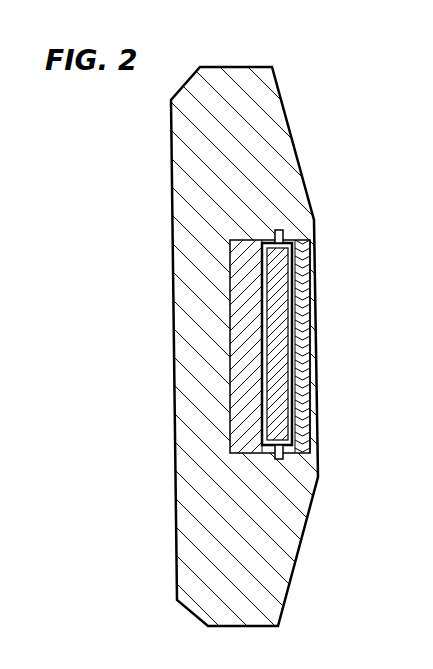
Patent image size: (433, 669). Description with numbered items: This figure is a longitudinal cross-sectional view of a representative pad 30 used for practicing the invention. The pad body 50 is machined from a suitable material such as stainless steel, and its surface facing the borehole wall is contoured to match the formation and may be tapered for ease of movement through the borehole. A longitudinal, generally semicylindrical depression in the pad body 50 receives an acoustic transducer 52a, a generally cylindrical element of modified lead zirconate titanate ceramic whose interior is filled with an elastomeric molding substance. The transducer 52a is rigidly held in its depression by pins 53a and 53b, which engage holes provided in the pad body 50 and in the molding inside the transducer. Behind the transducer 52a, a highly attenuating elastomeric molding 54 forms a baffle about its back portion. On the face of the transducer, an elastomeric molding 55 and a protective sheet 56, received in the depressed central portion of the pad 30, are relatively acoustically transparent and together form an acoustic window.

The pad 30 is at (262, 62).
The pad body 50 is at (251, 155).
The acoustic transducer 52a is at (293, 288).
The pin 53a is at (279, 230).
The pin 53b is at (283, 458).
The elastomeric molding 54 is at (258, 320).
The elastomeric molding 55 is at (302, 318).
The protective sheet 56 is at (311, 252).